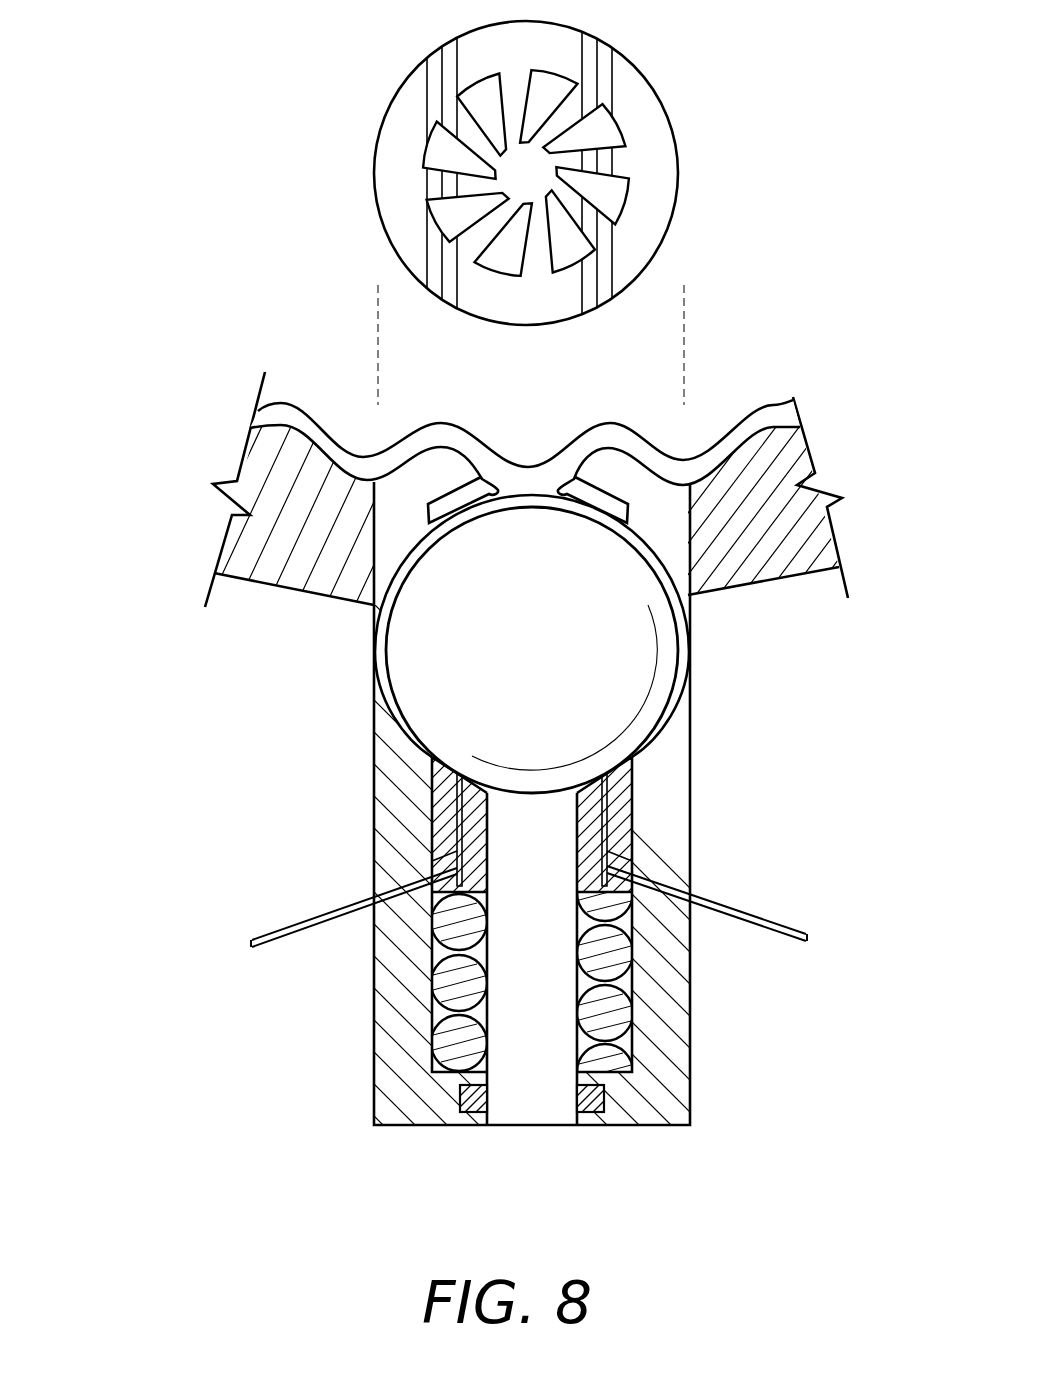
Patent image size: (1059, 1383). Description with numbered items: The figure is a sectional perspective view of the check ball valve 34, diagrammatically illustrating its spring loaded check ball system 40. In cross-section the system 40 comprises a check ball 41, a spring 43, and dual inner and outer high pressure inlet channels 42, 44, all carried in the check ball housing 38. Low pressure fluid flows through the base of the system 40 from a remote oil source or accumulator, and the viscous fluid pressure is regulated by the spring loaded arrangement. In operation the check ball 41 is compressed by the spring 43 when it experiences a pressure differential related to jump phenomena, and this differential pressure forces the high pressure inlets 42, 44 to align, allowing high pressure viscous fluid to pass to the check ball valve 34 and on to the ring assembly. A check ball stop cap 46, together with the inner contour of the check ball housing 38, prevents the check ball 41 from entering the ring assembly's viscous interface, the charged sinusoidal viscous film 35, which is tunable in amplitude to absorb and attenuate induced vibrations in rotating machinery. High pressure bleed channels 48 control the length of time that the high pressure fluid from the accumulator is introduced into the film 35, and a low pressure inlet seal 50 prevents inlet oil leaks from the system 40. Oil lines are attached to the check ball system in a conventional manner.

The check ball valve 34 is at (212, 690).
The charged sinusoidal viscous film 35 is at (607, 440).
The check ball housing 38 is at (680, 980).
The spring loaded check ball system 40 is at (352, 562).
The check ball 41 is at (540, 655).
The inner high pressure inlet channel 42 is at (441, 840).
The spring 43 is at (634, 1041).
The outer high pressure inlet channel 44 is at (260, 935).
The check ball stop cap 46 is at (645, 110).
The high pressure bleed channels 48 is at (578, 870).
The low pressure inlet seal 50 is at (578, 1097).